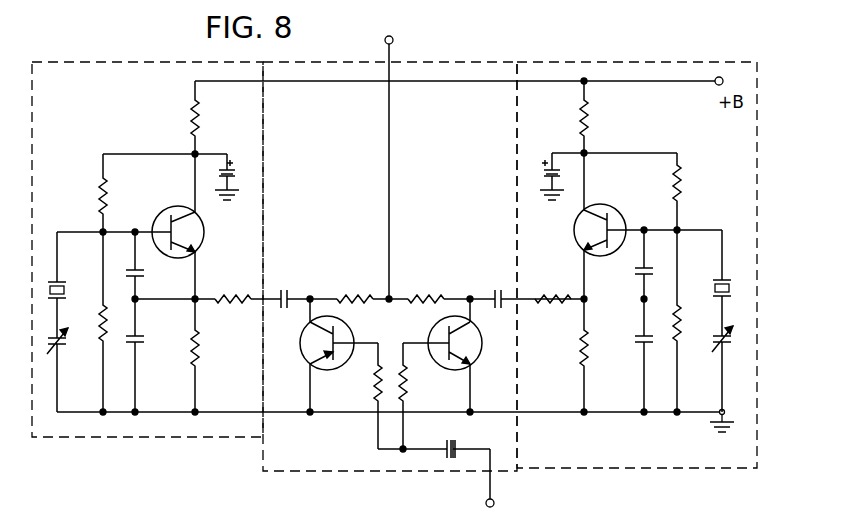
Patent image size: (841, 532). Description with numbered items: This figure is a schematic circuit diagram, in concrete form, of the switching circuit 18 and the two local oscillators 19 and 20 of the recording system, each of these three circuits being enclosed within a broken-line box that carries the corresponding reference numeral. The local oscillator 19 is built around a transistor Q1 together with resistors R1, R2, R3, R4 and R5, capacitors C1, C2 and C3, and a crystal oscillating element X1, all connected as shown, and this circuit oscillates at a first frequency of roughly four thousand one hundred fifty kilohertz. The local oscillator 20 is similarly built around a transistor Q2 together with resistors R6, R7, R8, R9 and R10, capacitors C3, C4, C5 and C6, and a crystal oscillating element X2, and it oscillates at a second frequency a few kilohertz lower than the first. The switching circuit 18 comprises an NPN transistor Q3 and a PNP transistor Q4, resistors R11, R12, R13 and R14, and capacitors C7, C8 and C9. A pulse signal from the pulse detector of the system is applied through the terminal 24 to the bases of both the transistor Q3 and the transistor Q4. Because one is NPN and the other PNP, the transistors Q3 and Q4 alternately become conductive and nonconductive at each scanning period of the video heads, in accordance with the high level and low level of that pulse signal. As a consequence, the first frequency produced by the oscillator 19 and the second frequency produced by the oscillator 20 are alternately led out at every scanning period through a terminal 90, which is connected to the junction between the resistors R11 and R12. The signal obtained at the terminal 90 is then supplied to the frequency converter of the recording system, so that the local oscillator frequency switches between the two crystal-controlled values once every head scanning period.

The switching circuit 18 is at (422, 62).
The local oscillator 19 is at (534, 62).
The local oscillator 20 is at (49, 62).
The terminal 24 is at (495, 503).
The terminal 90 is at (385, 38).
The resistor R1 is at (597, 117).
The resistor R2 is at (689, 191).
The resistor R3 is at (689, 321).
The resistor R4 is at (597, 355).
The resistor R5 is at (553, 289).
The resistor R6 is at (206, 117).
The resistor R7 is at (87, 193).
The resistor R8 is at (87, 322).
The resistor R9 is at (207, 355).
The resistor R10 is at (233, 289).
The resistor R11 is at (426, 287).
The resistor R12 is at (355, 287).
The resistor R13 is at (419, 396).
The resistor R14 is at (359, 396).
The capacitor C1 is at (629, 264).
The capacitor C2 is at (632, 355).
The capacitor C3 is at (730, 369).
The capacitor C4 is at (147, 265).
The capacitor C5 is at (144, 355).
The capacitor C6 is at (67, 370).
The capacitor C7 is at (487, 290).
The capacitor C8 is at (291, 290).
The capacitor C9 is at (434, 440).
The transistor Q1 is at (629, 226).
The transistor Q2 is at (193, 226).
The NPN transistor Q3 is at (455, 355).
The PNP transistor Q4 is at (325, 355).
The crystal oscillating element X1 is at (712, 283).
The crystal oscillating element X2 is at (67, 285).